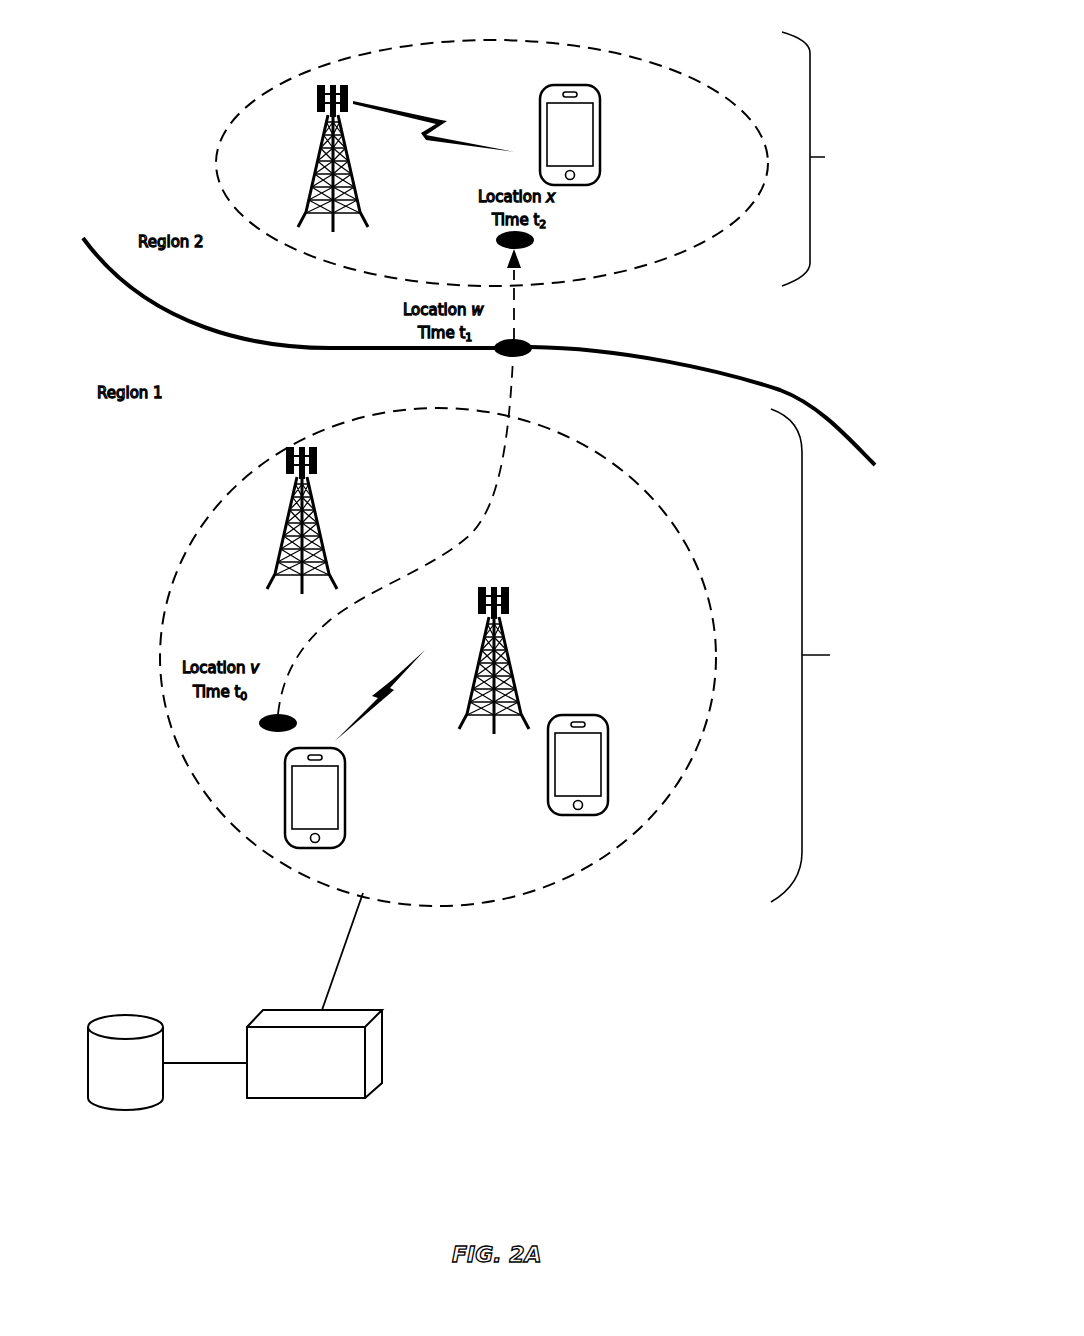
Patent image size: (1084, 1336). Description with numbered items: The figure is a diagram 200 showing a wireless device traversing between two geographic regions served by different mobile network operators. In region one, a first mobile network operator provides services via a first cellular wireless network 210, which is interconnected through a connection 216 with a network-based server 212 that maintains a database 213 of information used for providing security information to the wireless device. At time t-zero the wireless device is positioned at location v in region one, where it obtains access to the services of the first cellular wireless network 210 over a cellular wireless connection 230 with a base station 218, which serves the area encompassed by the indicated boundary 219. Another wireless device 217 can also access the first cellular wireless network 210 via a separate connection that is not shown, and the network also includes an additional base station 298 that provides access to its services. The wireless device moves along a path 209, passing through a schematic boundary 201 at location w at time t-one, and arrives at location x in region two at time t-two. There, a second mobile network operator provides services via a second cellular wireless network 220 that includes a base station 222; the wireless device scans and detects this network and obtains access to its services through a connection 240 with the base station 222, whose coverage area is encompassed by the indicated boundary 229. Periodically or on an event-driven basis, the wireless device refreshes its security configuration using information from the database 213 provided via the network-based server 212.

The diagram 200 is at (110, 35).
The schematic boundary 201 is at (793, 388).
The path 209 is at (512, 397).
The first cellular wireless network 210 is at (856, 655).
The network-based server 212 is at (410, 1010).
The database 213 is at (197, 1023).
The connection 216 is at (347, 945).
The wireless device 217 is at (608, 760).
The base station 218 is at (508, 652).
The boundary 219 is at (628, 488).
The second cellular wireless network 220 is at (866, 159).
The base station 222 is at (392, 165).
The boundary 229 is at (710, 85).
The cellular wireless connection 230 is at (360, 715).
The connection 240 is at (433, 130).
The base station 298 is at (323, 530).